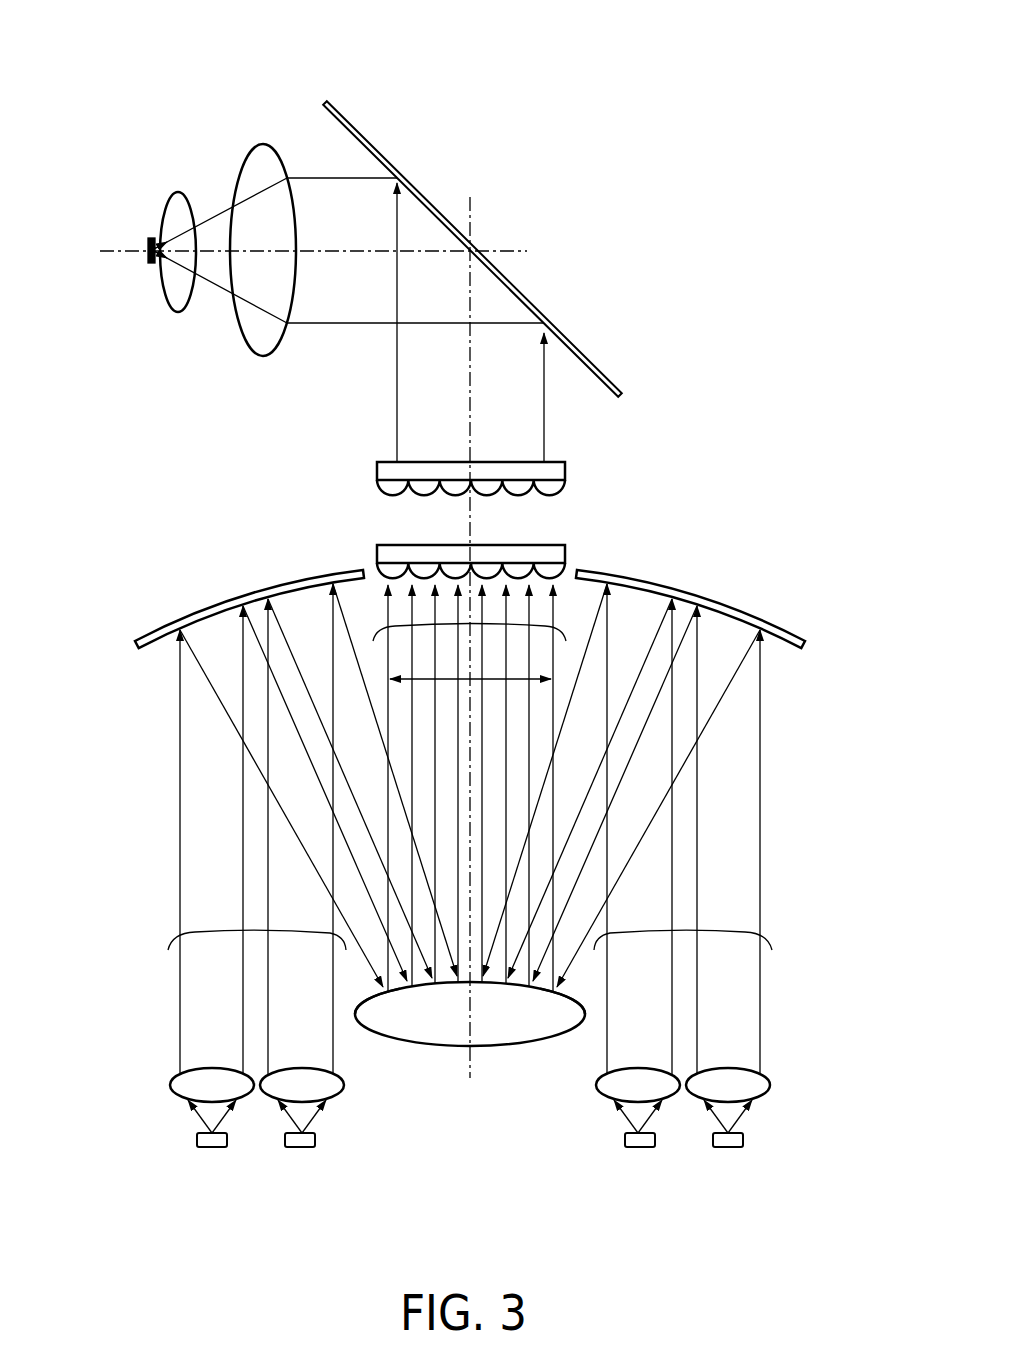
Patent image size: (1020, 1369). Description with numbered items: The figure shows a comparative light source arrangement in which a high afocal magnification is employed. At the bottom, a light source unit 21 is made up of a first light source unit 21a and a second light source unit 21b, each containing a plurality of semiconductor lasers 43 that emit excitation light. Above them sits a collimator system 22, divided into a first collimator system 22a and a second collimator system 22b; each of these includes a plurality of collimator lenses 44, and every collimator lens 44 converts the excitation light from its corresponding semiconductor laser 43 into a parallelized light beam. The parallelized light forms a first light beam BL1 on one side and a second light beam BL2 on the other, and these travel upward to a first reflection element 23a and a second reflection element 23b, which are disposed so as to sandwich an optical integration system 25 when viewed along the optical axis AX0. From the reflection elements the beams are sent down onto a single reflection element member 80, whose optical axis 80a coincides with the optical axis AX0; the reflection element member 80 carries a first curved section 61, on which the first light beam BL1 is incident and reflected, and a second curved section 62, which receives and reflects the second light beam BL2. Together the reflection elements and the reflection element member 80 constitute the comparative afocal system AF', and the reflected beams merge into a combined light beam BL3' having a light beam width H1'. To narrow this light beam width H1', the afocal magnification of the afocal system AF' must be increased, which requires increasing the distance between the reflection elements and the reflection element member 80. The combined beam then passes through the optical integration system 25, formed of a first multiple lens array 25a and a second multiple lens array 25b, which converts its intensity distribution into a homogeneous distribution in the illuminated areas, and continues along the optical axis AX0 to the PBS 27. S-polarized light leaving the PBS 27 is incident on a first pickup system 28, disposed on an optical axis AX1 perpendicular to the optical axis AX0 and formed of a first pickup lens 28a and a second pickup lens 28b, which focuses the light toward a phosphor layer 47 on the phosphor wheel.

The light source unit 21 is at (525, 1193).
The first light source unit 21a is at (321, 1142).
The second light source unit 21b is at (614, 1140).
The collimator system 22 is at (525, 1142).
The first collimator system 22a is at (354, 1093).
The second collimator system 22b is at (592, 1090).
The first reflection element 23a is at (168, 627).
The second reflection element 23b is at (777, 623).
The optical integration system 25 is at (676, 445).
The first multiple lens array 25a is at (577, 554).
The second multiple lens array 25b is at (577, 466).
The PBS 27 is at (567, 345).
The first pickup system 28 is at (265, 60).
The first pickup lens 28a is at (260, 157).
The second pickup lens 28b is at (182, 207).
The semiconductor laser 43 is at (302, 1147).
The collimator lens 44 is at (178, 1087).
The phosphor layer 47 is at (148, 250).
The first curved section 61 is at (373, 995).
The second curved section 62 is at (581, 997).
The reflection element member 80 is at (512, 1027).
The optical axis of the reflection element member 80a is at (469, 1063).
The optical axis AX0 is at (469, 528).
The optical axis AX1 is at (467, 253).
The first light beam BL1 is at (172, 937).
The second light beam BL2 is at (768, 937).
The combined light beam BL3' is at (422, 762).
The light beam width H1' is at (534, 612).
The afocal system AF' is at (767, 535).